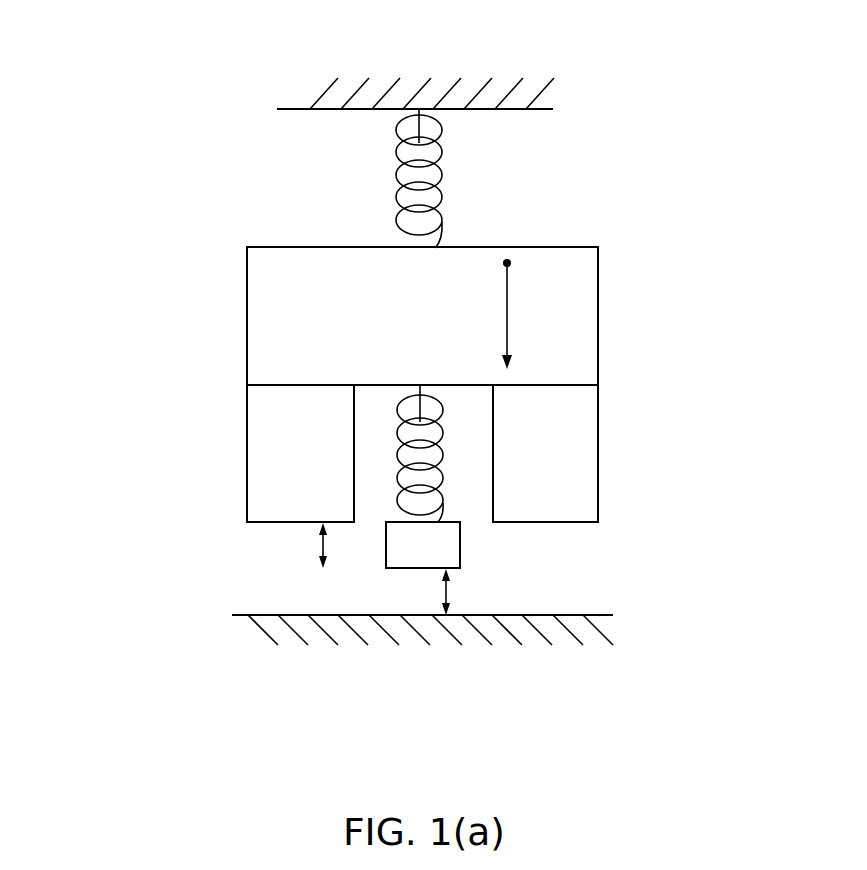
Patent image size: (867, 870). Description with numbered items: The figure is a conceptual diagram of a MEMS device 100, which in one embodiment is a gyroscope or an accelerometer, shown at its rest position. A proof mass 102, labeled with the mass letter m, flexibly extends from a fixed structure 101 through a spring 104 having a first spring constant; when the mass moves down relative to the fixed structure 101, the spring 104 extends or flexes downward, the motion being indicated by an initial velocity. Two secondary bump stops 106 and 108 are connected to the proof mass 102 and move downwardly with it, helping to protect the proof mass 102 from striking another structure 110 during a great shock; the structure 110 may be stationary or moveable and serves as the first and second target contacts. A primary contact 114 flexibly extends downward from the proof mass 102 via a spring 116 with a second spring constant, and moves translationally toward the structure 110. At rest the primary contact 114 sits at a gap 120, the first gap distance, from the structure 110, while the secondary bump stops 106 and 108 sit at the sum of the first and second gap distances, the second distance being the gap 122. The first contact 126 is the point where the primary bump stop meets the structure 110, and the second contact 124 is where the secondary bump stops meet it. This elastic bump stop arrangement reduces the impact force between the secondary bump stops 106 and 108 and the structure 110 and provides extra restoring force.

The MEMS device 100 is at (524, 35).
The fixed structure 101 is at (545, 109).
The proof mass 102 is at (247, 295).
The spring 104 is at (397, 172).
The secondary bump stop 106 is at (247, 448).
The secondary bump stop 108 is at (598, 450).
The structure 110 is at (598, 614).
The primary contact 114 is at (460, 542).
The spring 116 is at (445, 493).
The gap 120 is at (443, 588).
The gap 122 is at (315, 548).
The second contact 124 is at (272, 523).
The first contact 126 is at (392, 568).